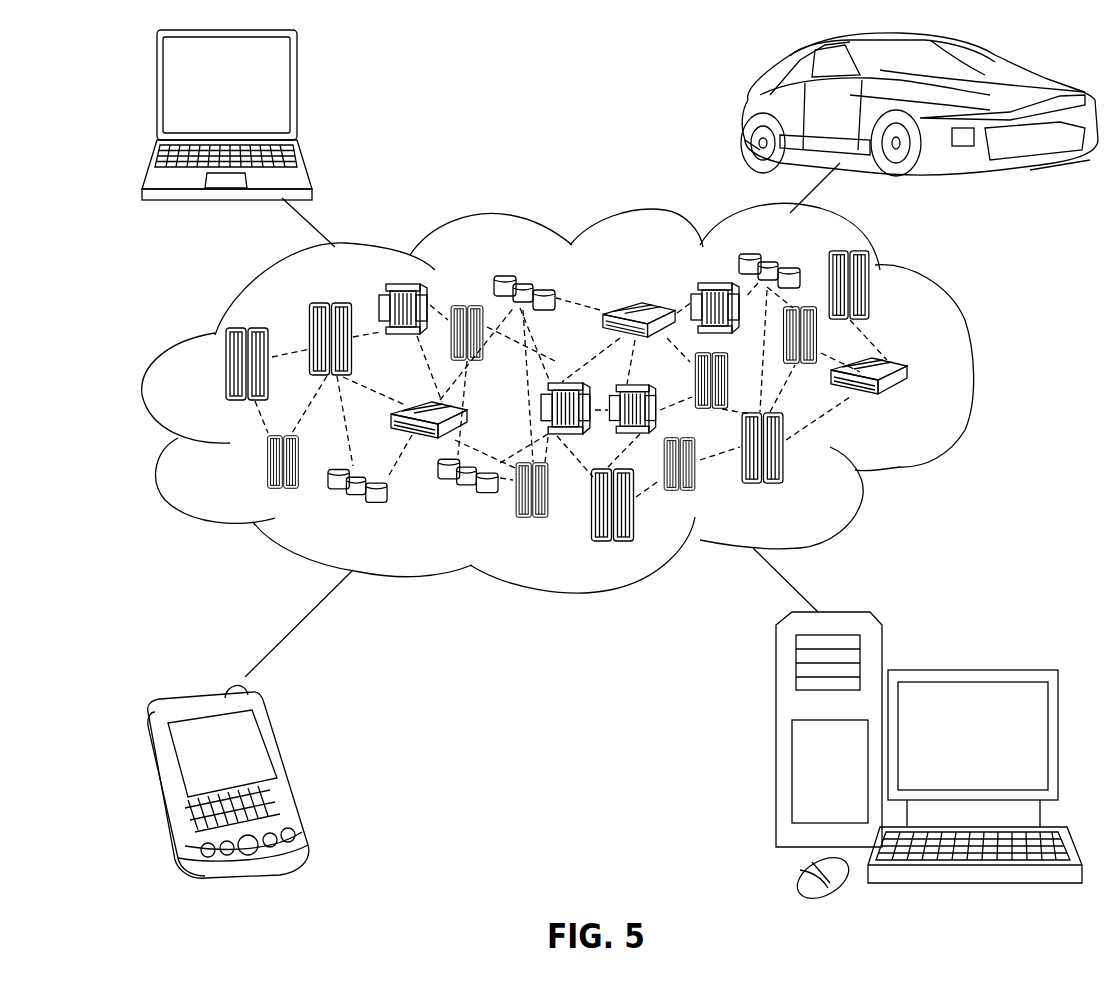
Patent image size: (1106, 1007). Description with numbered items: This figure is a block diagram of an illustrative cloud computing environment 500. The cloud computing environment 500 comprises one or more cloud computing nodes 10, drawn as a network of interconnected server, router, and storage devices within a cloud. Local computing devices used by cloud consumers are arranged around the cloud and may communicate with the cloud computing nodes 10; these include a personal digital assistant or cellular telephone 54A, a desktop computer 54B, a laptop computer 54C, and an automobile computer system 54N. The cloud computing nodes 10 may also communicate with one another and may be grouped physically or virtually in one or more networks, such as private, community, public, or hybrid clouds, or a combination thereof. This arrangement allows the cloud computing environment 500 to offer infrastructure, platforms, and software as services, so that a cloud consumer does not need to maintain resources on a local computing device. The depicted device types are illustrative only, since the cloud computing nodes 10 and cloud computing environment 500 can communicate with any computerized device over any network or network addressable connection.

The cloud computing environment 500 is at (595, 398).
The cloud computing node 10 is at (914, 408).
The personal digital assistant or cellular telephone 54A is at (282, 770).
The desktop computer 54B is at (968, 670).
The laptop computer 54C is at (299, 84).
The automobile computer system 54N is at (745, 104).